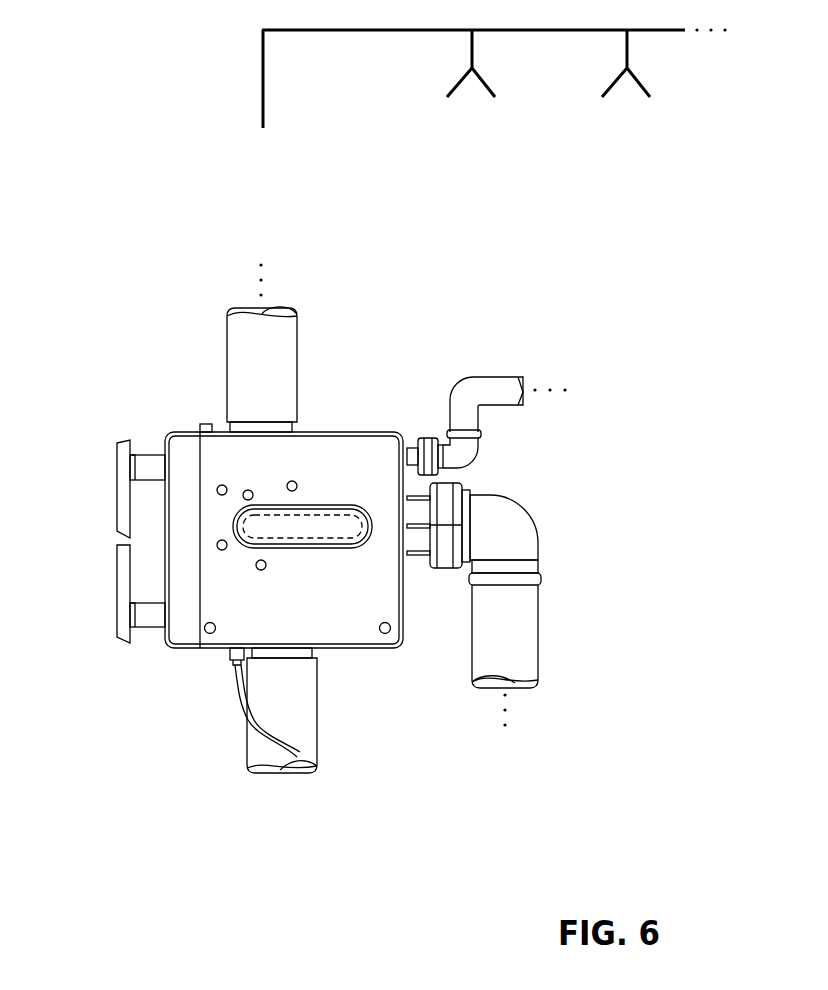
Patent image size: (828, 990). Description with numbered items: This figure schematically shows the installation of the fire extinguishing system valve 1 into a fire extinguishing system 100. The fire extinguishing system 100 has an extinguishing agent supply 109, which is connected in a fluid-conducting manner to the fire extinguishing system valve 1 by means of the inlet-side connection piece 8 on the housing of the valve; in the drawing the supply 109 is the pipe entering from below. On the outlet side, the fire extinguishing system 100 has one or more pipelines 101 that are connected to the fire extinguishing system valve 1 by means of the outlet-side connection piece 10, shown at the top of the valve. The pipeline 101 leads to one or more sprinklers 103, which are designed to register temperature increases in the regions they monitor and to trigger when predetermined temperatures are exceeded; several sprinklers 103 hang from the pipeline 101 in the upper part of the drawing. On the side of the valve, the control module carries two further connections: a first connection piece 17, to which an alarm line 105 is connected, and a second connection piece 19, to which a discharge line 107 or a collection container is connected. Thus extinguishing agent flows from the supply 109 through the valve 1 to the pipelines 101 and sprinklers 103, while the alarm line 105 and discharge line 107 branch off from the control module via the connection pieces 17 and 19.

The fire extinguishing system 100 is at (183, 212).
The sprinklers 103 is at (490, 80).
The fire extinguishing system valve 1 is at (100, 522).
The outlet-side connection piece 10 is at (258, 425).
The pipelines 101 is at (268, 366).
The inlet-side connection piece 8 is at (300, 652).
The extinguishing agent supply 109 is at (295, 708).
The first connection piece 17 is at (462, 458).
The alarm line 105 is at (492, 388).
The second connection piece 19 is at (508, 540).
The discharge line 107 is at (512, 632).